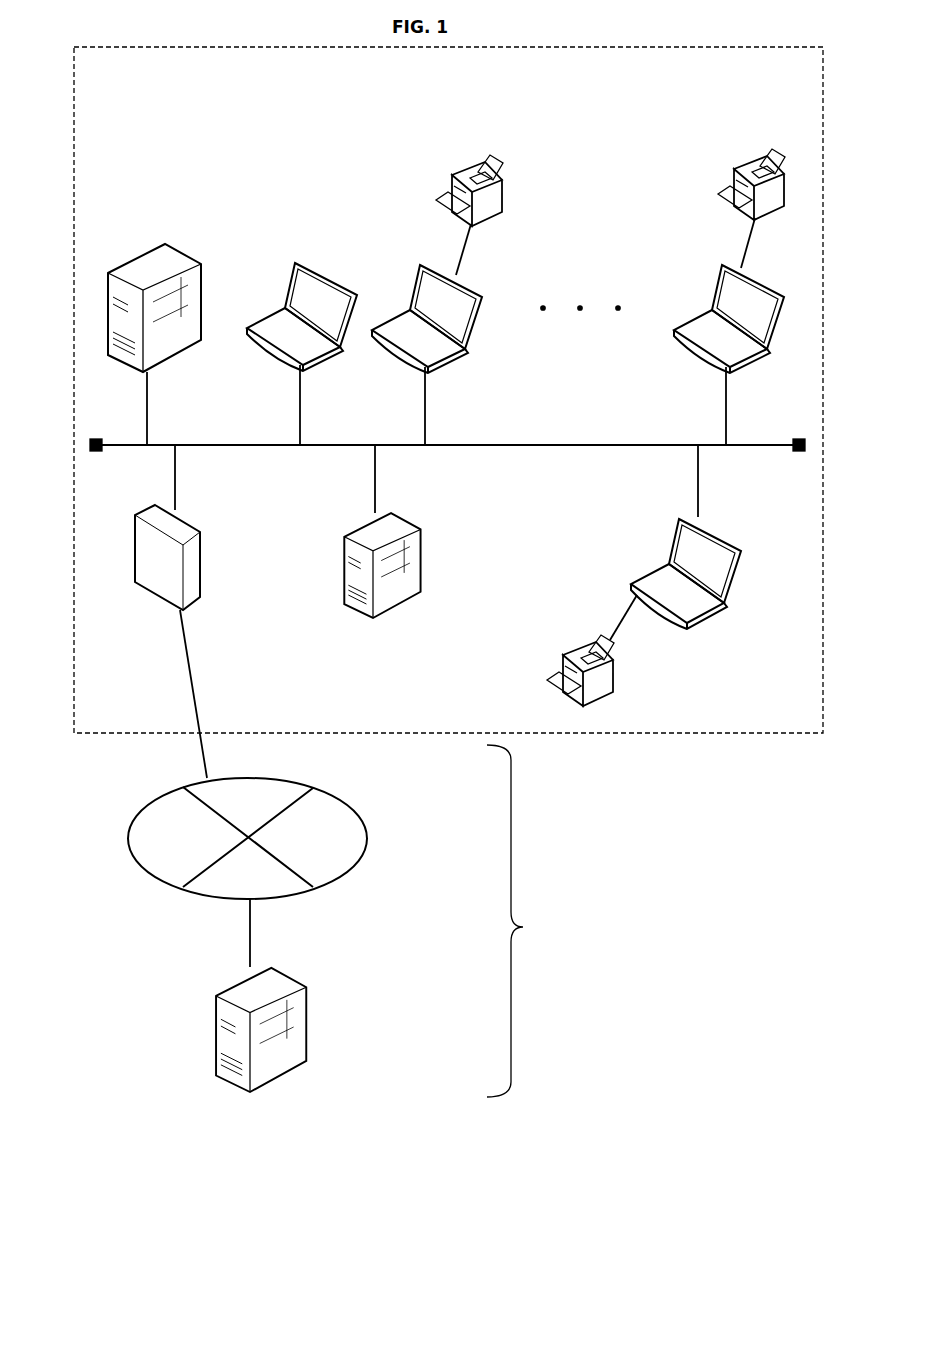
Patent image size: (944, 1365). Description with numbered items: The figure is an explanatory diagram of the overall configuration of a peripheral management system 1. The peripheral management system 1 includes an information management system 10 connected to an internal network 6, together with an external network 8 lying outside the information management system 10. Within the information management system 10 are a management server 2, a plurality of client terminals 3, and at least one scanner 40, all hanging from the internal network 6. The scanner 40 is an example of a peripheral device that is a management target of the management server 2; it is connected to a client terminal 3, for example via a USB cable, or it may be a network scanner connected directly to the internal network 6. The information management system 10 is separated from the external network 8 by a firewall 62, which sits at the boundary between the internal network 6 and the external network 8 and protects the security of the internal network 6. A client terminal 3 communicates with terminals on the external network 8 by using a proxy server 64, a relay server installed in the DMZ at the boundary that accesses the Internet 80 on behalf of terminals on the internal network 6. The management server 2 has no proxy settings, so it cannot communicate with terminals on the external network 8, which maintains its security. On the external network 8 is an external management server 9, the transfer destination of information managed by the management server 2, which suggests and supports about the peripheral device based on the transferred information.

The peripheral management system 1 is at (448, 621).
The information management system 10 is at (448, 390).
The management server 2 is at (148, 244).
The client terminal 3 is at (737, 655).
The scanner 40 is at (472, 172).
The internal network 6 is at (595, 445).
The firewall 62 is at (202, 580).
The proxy server 64 is at (383, 618).
The external network 8 is at (410, 890).
The Internet 80 is at (350, 872).
The external management server 9 is at (332, 1125).